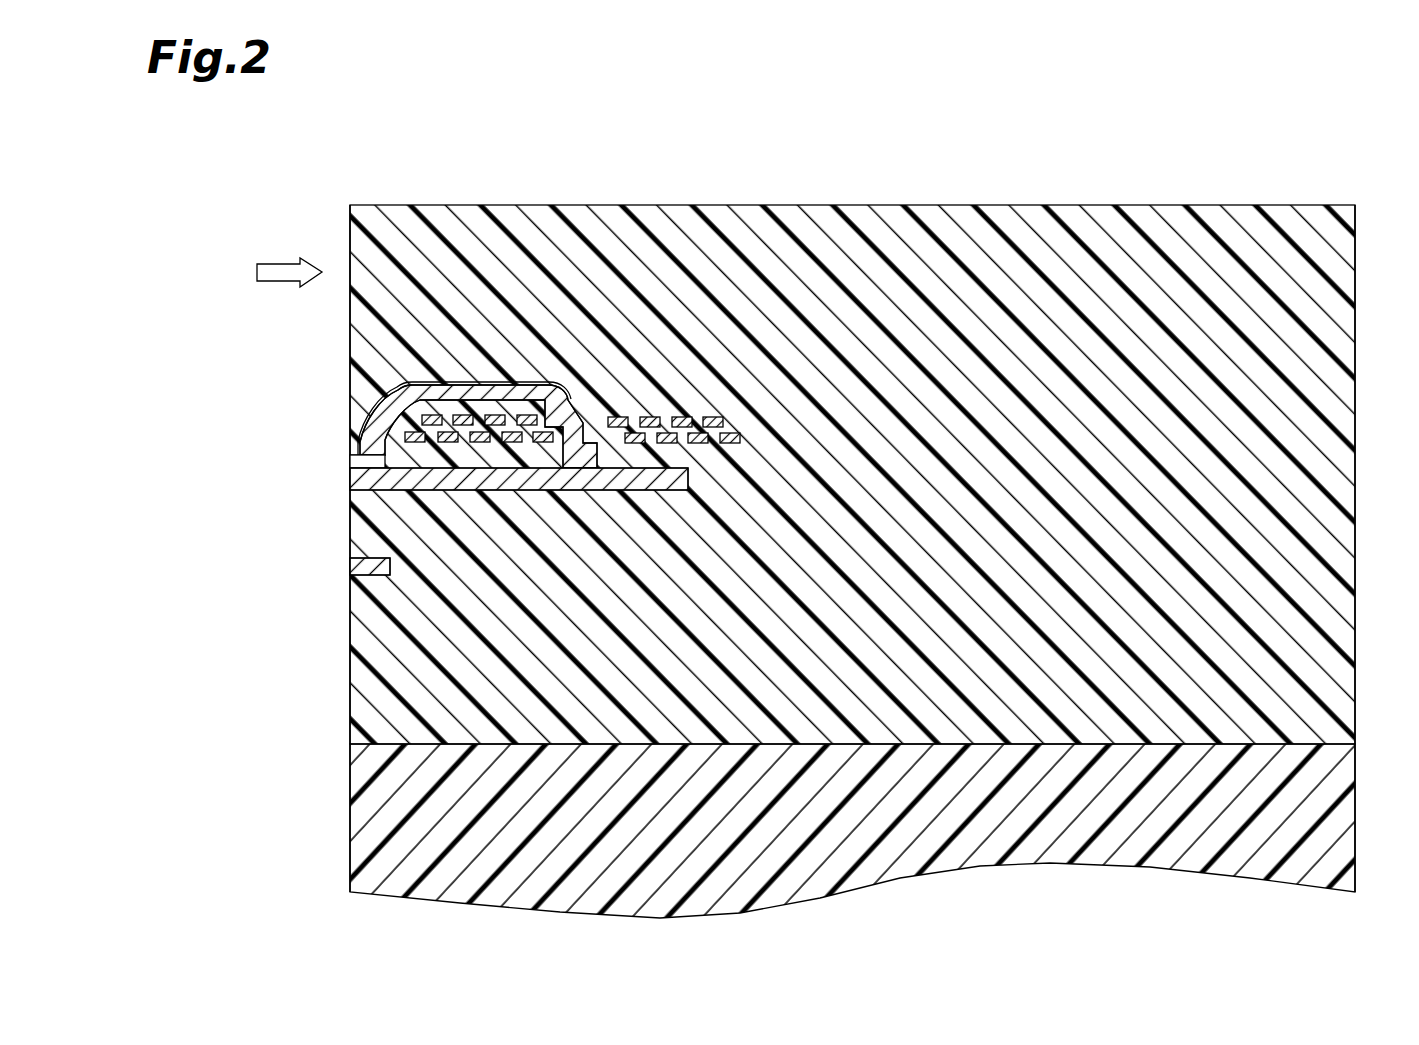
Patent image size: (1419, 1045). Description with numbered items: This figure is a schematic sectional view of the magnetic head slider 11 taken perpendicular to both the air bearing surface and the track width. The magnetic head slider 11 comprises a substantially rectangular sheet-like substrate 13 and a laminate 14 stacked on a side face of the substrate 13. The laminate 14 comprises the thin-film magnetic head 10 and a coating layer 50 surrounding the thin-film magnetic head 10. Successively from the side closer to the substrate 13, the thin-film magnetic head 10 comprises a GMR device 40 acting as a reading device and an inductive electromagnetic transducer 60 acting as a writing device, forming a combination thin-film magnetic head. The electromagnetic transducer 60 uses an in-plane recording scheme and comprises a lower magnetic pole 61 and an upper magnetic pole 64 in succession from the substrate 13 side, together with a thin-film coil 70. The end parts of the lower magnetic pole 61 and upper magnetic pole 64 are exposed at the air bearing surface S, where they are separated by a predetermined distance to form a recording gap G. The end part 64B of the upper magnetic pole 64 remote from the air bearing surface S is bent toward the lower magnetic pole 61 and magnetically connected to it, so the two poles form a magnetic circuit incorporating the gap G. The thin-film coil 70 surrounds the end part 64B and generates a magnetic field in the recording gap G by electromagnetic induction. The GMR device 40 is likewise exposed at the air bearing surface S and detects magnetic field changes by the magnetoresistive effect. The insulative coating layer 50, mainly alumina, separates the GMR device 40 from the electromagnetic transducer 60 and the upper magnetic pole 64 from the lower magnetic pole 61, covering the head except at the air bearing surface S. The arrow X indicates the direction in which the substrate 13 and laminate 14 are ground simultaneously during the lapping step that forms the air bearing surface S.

The magnetic head slider 11 is at (231, 196).
The thin-film magnetic head 10 is at (168, 397).
The substrate 13 is at (362, 808).
The laminate 14 is at (1355, 472).
The GMR device 40 is at (366, 553).
The coating layer 50 is at (506, 216).
The electromagnetic transducer 60 is at (220, 342).
The lower magnetic pole 61 is at (350, 483).
The upper magnetic pole 64 is at (390, 391).
The end part of the upper magnetic pole 64B is at (577, 405).
The thin-film coil 70 is at (395, 380).
The recording gap G is at (350, 459).
The air bearing surface S is at (349, 219).
The direction of arrow X is at (289, 260).